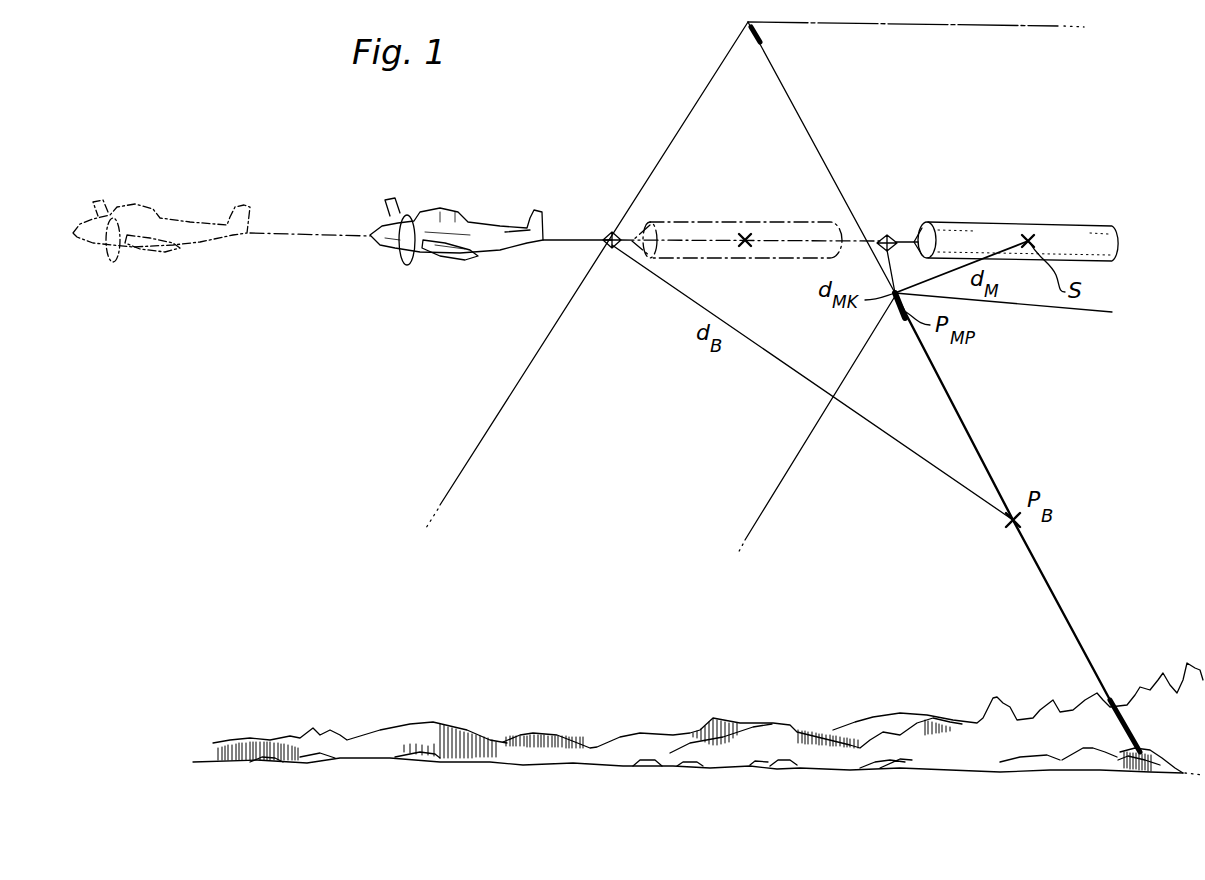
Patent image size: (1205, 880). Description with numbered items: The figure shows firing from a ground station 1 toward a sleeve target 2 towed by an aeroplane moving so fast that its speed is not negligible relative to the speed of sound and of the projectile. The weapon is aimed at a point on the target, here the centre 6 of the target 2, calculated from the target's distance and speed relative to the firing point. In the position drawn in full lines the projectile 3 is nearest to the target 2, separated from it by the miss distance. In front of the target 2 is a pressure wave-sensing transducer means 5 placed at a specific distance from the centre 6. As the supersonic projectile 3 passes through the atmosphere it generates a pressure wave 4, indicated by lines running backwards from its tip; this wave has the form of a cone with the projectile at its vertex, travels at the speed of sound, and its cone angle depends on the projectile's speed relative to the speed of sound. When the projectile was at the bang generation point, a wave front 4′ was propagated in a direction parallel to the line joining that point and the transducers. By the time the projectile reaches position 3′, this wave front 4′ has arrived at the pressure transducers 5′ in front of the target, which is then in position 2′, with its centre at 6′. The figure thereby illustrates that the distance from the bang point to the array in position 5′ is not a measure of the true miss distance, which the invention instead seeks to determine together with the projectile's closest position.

The ground station / ground-based reference point 1 is at (1140, 750).
The sleeve target 2 is at (1115, 226).
The target in earlier position 2′ is at (818, 224).
The projectile 3 is at (899, 322).
The projectile in earlier position 3′ is at (762, 40).
The pressure wave 4 is at (780, 488).
The wave front 4′ is at (470, 448).
The pressure wave-sensing transducer means 5 is at (890, 235).
The pressure transducers in earlier position 5′ is at (612, 232).
The centre of the target 6 is at (1030, 237).
The imaged center point of target object 6′ is at (745, 234).